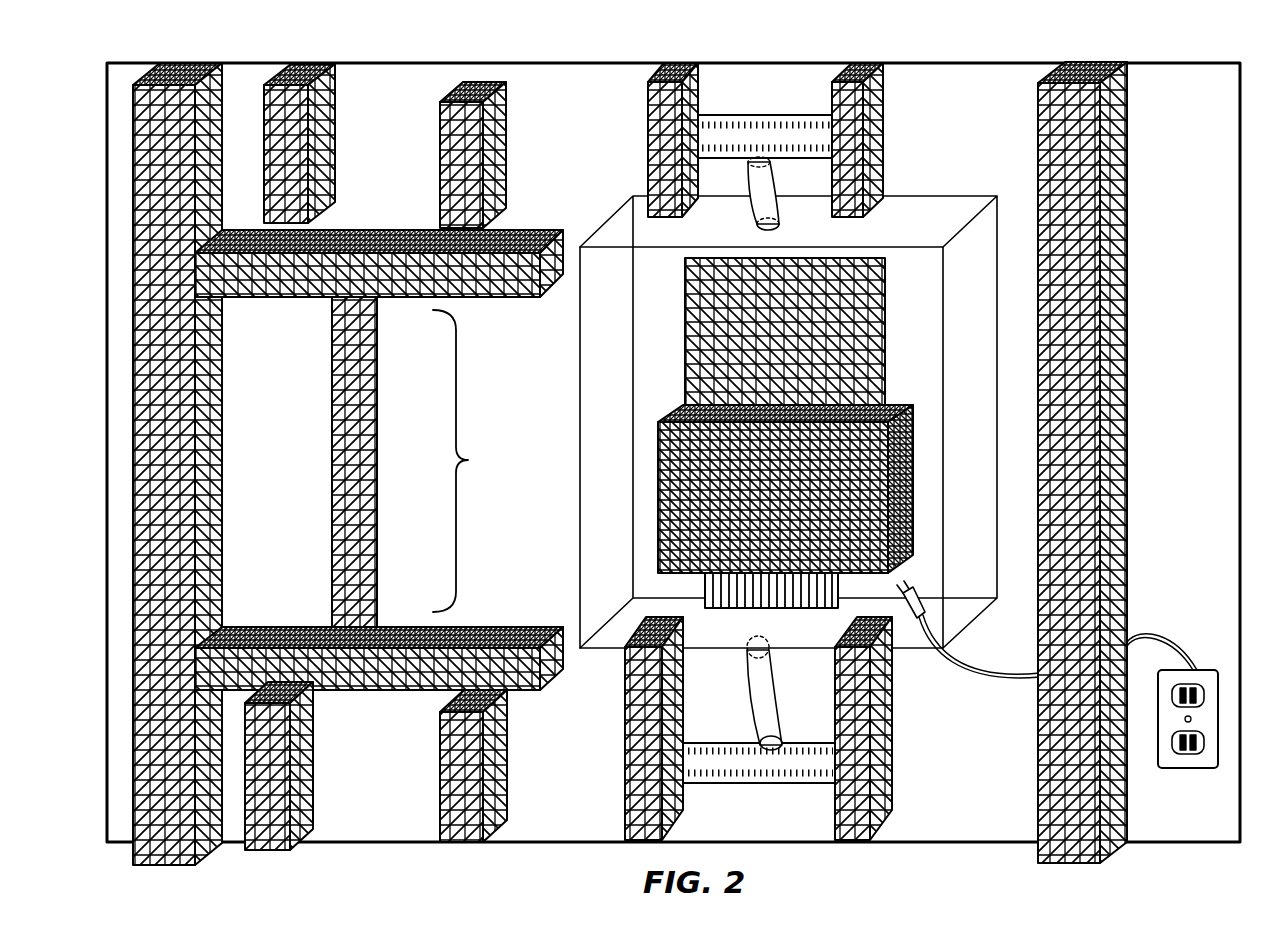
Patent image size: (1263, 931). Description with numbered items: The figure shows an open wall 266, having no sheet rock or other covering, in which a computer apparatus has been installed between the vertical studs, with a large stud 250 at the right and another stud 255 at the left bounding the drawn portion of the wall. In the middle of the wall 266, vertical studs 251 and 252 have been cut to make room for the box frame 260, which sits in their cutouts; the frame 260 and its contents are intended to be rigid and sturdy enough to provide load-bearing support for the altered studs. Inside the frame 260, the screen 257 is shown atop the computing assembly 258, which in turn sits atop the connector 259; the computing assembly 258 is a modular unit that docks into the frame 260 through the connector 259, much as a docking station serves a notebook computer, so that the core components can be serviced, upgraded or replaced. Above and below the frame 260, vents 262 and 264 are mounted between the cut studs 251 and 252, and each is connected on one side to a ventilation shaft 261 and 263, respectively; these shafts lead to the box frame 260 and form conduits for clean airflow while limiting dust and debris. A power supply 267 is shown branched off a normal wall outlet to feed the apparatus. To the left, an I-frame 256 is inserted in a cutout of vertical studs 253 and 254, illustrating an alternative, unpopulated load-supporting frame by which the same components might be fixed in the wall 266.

The right support post 250 is at (1128, 158).
The vertical stud 251 is at (885, 138).
The vertical stud 252 is at (648, 186).
The vertical stud 253 is at (508, 137).
The vertical stud 254 is at (337, 137).
The left support post 255 is at (217, 366).
The I-frame 256 is at (468, 460).
The screen 257 is at (858, 258).
The computing assembly 258 is at (917, 500).
The connector 259 is at (745, 612).
The frame 260 is at (935, 193).
The ventilation shaft 261 is at (780, 173).
The vent 262 is at (797, 113).
The ventilation shaft 263 is at (782, 718).
The vent 264 is at (768, 787).
The wall 266 is at (1183, 60).
The power supply 267 is at (1047, 629).